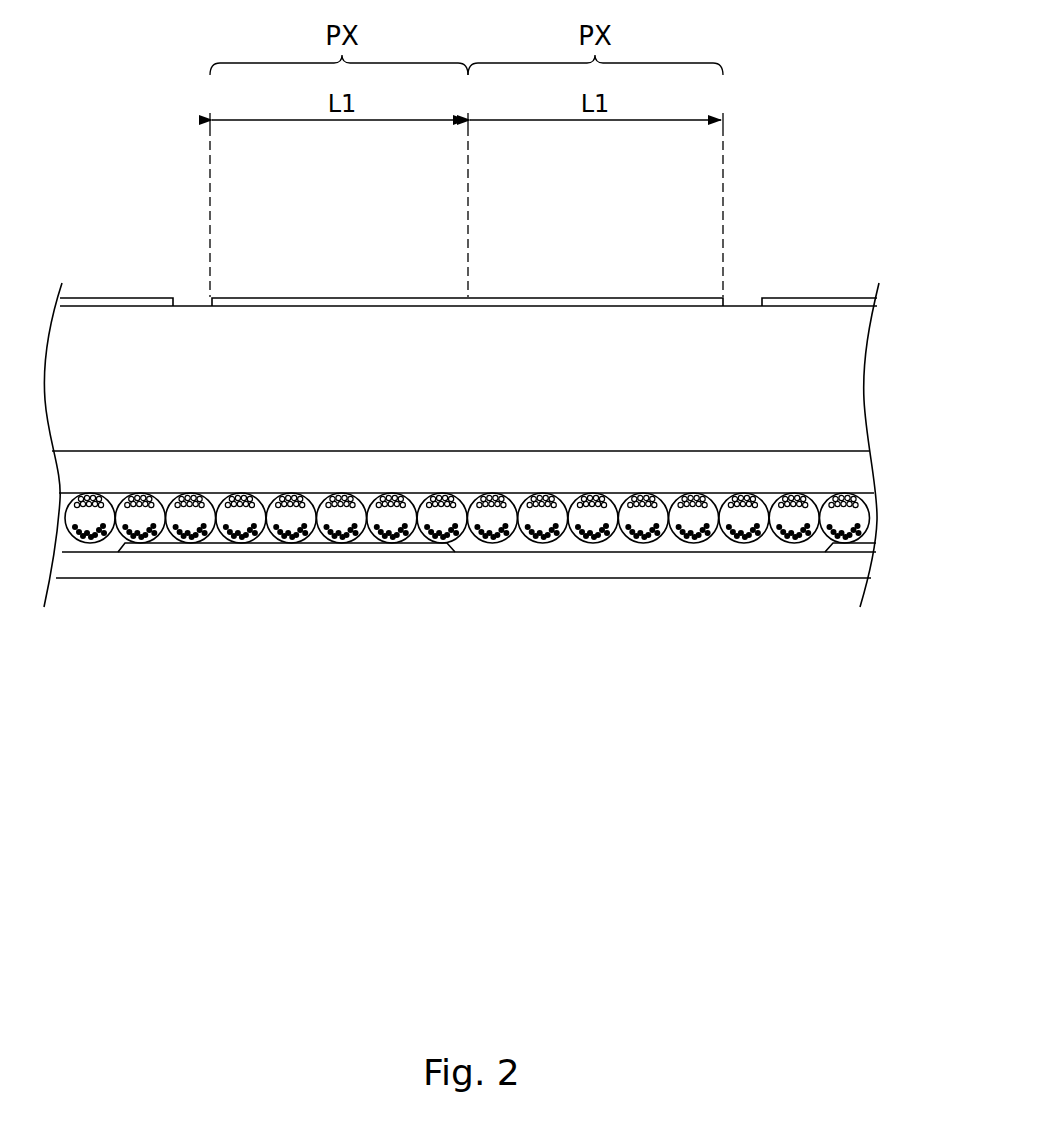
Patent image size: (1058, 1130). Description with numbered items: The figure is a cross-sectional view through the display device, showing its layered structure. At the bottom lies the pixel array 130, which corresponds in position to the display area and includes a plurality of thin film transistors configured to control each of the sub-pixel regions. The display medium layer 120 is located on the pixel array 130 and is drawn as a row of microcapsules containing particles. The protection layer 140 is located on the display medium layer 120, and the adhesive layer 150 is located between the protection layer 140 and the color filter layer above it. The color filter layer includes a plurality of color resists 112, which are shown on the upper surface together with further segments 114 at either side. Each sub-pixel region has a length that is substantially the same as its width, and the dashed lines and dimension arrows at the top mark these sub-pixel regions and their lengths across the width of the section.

The color resist 112 is at (575, 297).
The electrode 114 is at (190, 284).
The display medium layer 120 is at (873, 528).
The pixel array 130 is at (867, 567).
The protection layer 140 is at (853, 472).
The adhesive layer 150 is at (845, 389).